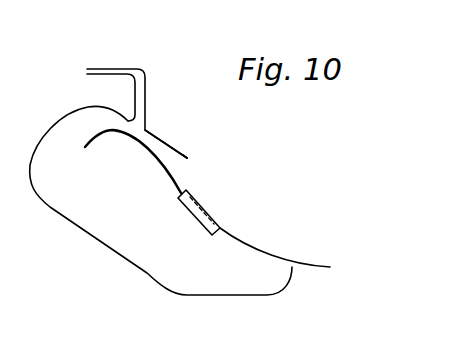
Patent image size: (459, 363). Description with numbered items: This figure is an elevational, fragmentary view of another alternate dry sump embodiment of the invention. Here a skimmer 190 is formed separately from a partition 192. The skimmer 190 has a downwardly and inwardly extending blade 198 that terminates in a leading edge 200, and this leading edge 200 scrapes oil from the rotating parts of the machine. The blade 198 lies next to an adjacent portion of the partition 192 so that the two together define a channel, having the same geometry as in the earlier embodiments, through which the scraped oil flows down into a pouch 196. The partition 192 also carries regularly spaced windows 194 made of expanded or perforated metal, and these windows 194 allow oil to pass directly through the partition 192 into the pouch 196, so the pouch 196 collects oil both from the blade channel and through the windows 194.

The skimmer 190 is at (145, 103).
The blade 198 is at (167, 140).
The leading edge 200 is at (187, 157).
The partition 192 is at (178, 178).
The windows 194 is at (207, 213).
The pouch 196 is at (166, 238).